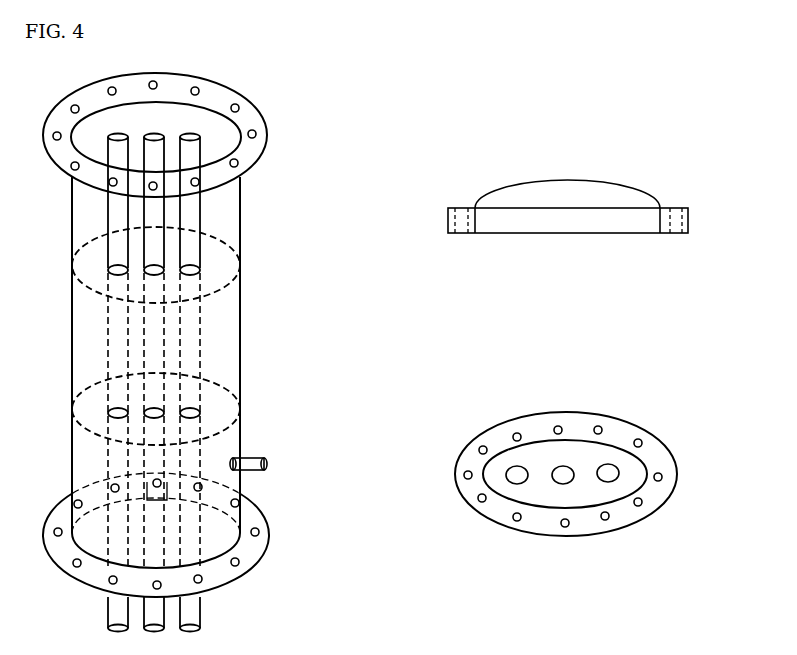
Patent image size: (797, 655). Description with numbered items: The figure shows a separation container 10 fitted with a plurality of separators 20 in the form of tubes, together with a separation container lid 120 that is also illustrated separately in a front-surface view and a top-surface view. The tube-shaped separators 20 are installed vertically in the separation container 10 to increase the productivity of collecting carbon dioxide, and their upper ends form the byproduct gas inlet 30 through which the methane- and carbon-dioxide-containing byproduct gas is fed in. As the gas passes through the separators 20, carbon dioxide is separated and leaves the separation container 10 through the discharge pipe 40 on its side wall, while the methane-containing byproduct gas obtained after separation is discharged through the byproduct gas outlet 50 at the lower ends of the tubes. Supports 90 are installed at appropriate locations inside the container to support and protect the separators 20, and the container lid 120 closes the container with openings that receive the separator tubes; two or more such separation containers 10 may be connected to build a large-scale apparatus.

The separation container 10 is at (240, 227).
The separator 20 is at (200, 315).
The byproduct gas inlet 30 is at (198, 138).
The discharge pipe 40 is at (265, 463).
The byproduct gas outlet 50 is at (202, 625).
The support 90 is at (213, 405).
The separation container lid 120 is at (247, 165).